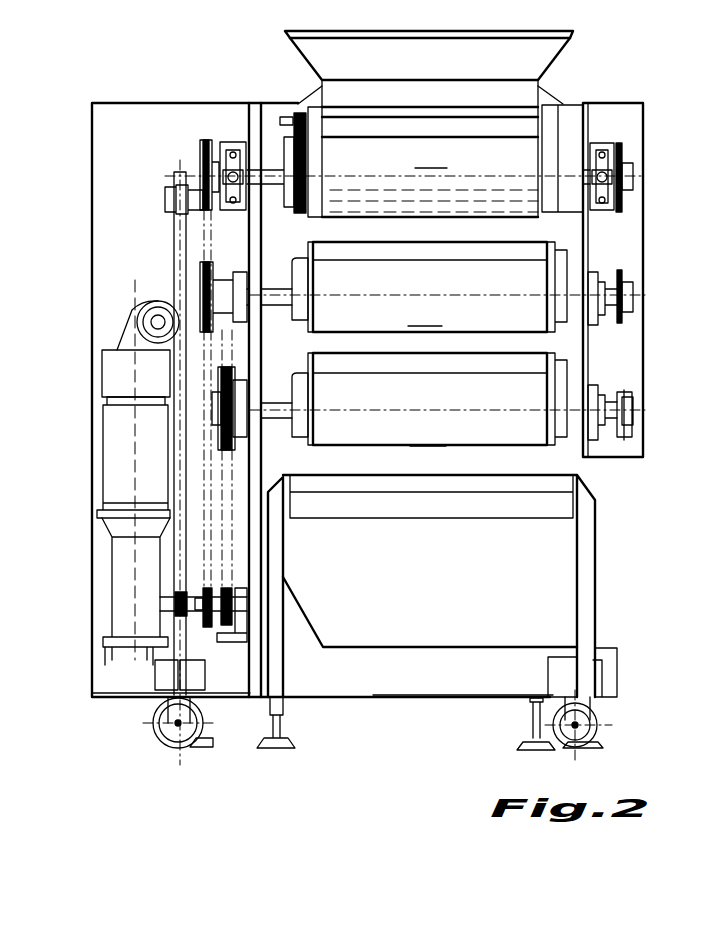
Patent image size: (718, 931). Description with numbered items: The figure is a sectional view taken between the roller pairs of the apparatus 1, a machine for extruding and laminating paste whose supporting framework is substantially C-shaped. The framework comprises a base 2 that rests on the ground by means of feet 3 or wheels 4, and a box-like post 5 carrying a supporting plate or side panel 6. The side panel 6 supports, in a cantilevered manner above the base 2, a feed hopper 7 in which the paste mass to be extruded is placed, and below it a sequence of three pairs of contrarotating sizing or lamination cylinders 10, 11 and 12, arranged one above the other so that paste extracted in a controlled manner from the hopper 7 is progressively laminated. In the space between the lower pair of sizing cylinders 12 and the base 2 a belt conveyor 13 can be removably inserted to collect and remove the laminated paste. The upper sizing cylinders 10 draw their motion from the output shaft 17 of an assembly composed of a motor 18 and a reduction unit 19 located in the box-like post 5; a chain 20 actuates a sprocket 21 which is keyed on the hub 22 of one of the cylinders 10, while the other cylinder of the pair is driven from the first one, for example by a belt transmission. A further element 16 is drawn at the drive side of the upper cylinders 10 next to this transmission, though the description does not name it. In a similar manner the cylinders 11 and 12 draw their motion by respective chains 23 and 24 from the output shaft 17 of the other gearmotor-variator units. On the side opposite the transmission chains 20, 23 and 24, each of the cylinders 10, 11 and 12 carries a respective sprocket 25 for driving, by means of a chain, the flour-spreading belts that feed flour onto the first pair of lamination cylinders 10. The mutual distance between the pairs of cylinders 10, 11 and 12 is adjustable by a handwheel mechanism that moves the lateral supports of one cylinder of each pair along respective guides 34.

The apparatus 1 is at (622, 88).
The base 2 is at (423, 699).
The feet 3 is at (287, 742).
The wheels 4 is at (165, 742).
The box-like post 5 is at (100, 375).
The side panel 6 is at (262, 264).
The feed hopper 7 is at (320, 63).
The upper sizing cylinders 10 is at (405, 161).
The sizing cylinders 11 is at (422, 287).
The lower sizing cylinders 12 is at (428, 401).
The belt conveyor 13 is at (597, 497).
The drive pulley of first roller 16 is at (293, 118).
The output shaft 17 is at (123, 600).
The motor 18 is at (110, 440).
The reduction unit 19 is at (165, 612).
The chain 20 is at (175, 230).
The sprocket 21 is at (177, 182).
The hub 22 is at (195, 188).
The chain 23 is at (207, 557).
The chain 24 is at (215, 480).
The sprocket 25 is at (622, 145).
The guides 34 is at (243, 150).